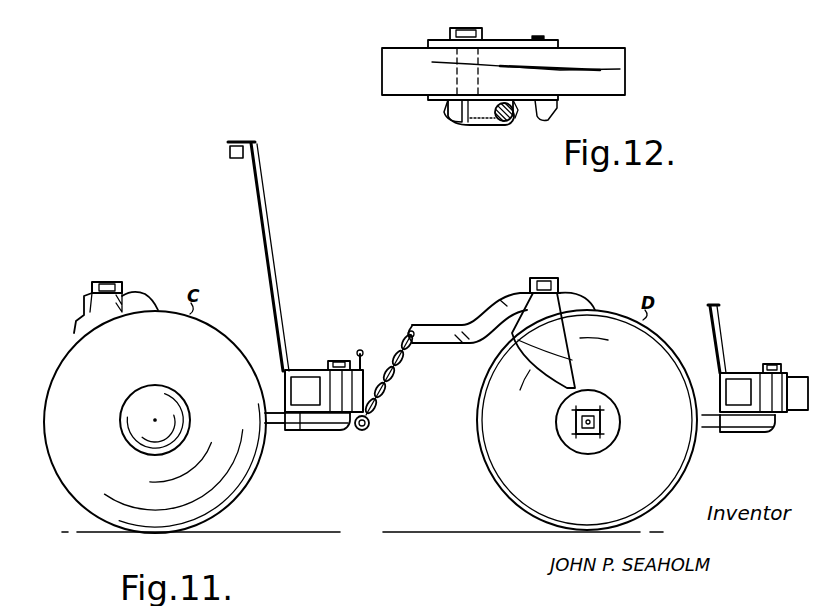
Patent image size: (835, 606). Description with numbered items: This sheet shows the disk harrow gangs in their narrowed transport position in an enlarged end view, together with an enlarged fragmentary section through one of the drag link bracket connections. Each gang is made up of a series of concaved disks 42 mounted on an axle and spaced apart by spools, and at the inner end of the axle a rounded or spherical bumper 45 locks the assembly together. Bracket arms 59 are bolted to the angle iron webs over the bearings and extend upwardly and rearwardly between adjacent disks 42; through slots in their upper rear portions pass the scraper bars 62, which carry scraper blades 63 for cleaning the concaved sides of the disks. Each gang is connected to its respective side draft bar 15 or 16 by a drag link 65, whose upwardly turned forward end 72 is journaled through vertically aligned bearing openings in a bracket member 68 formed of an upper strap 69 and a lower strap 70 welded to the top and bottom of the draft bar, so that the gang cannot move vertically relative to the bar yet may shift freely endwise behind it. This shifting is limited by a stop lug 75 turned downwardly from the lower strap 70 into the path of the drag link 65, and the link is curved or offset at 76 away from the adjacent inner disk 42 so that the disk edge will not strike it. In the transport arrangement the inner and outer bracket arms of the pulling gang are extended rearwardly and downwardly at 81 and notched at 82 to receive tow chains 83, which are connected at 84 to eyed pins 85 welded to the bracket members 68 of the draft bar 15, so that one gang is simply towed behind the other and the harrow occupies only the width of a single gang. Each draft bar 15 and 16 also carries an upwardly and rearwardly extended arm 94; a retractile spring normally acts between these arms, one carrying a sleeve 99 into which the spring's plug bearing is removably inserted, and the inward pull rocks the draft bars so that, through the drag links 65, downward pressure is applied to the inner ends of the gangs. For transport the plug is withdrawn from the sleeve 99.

In FIG. 11, the side draft bar 15 is at (278, 383).
In FIG. 12, the side draft bar 16 is at (626, 66).
In FIG. 11, the side draft bar 16 is at (720, 380).
In FIG. 11, the disk 42 is at (225, 510).
In FIG. 11, the spherical bumper 45 is at (150, 388).
In FIG. 11, the bracket arm 59 is at (138, 292).
In FIG. 11, the scraper bar 62 is at (116, 282).
In FIG. 11, the scraper blade 63 is at (80, 322).
In FIG. 12, the drag link 65 is at (503, 122).
In FIG. 11, the drag link 65 is at (290, 426).
In FIG. 12, the bracket member 68 is at (540, 39).
In FIG. 12, the upper strap 69 is at (560, 43).
In FIG. 11, the upper strap 69 is at (304, 370).
In FIG. 12, the lower strap 70 is at (516, 118).
In FIG. 11, the lower strap 70 is at (330, 430).
In FIG. 12, the upwardly turned forward end 72 is at (462, 28).
In FIG. 11, the upwardly turned forward end 72 is at (339, 360).
In FIG. 12, the outer stop lug 75 is at (447, 110).
In FIG. 11, the outer stop lug 75 is at (308, 431).
In FIG. 12, the curved offset portion 76 is at (466, 122).
In FIG. 11, the rearwardly and downwardly extended portion 81 is at (470, 344).
In FIG. 11, the notch 82 is at (416, 330).
In FIG. 11, the tow chain 83 is at (396, 373).
In FIG. 11, the chain connection 84 is at (370, 424).
In FIG. 11, the eyed pin 85 is at (363, 352).
In FIG. 11, the upwardly and rearwardly extended arm 94 is at (270, 237).
In FIG. 11, the sleeve 99 is at (229, 154).